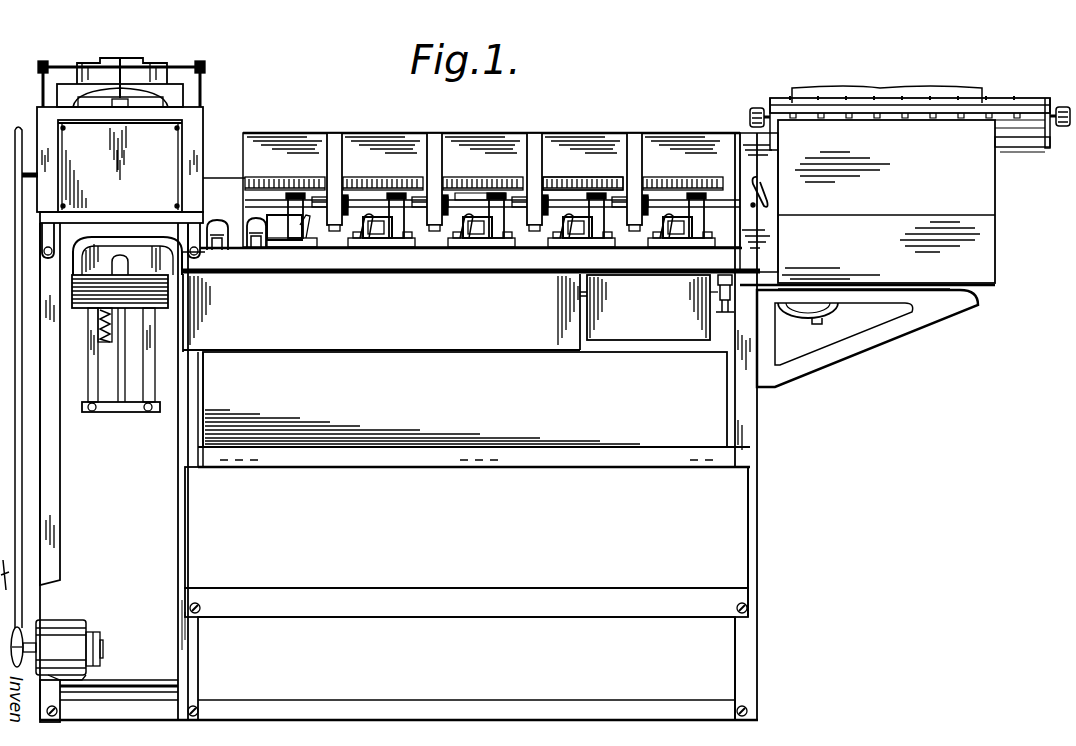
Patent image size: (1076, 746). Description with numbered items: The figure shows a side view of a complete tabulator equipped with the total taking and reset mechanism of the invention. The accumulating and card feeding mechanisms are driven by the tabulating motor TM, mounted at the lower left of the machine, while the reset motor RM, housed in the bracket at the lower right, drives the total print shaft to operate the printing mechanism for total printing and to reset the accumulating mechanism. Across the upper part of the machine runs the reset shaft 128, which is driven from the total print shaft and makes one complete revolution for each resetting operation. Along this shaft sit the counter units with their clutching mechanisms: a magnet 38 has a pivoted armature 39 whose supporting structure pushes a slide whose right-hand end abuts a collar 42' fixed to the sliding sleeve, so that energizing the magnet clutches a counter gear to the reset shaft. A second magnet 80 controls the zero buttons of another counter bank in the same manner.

The magnet 38 is at (383, 222).
The pivoted armature 39 is at (448, 227).
The magnet 80 is at (478, 213).
The reset shaft 128 is at (461, 203).
The collar 42' is at (583, 169).
The tabulating motor TM is at (69, 639).
The reset motor RM is at (811, 320).